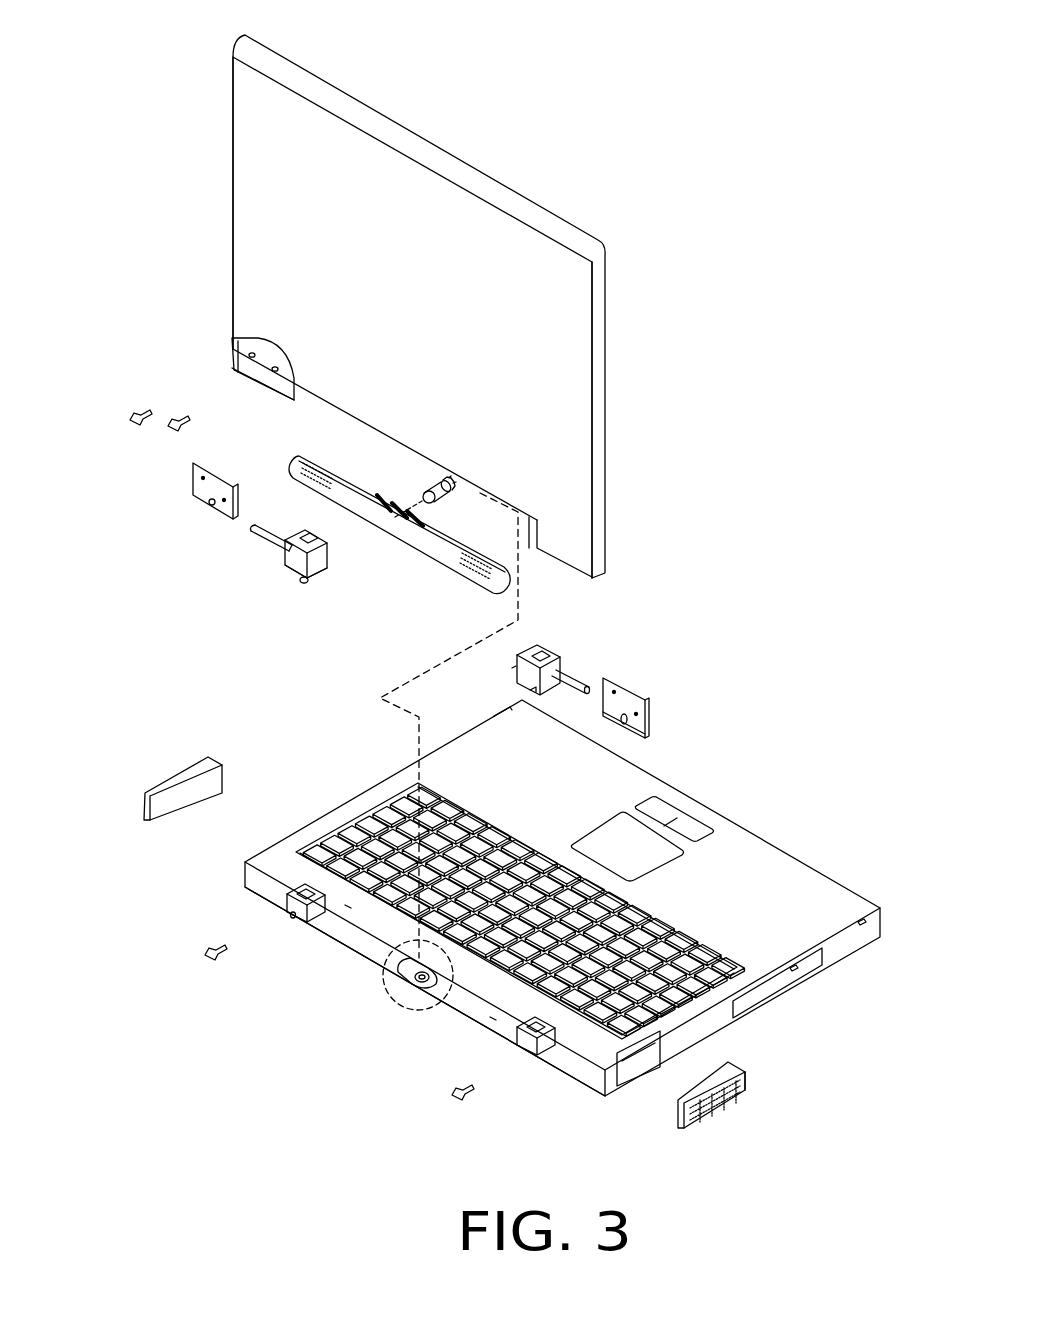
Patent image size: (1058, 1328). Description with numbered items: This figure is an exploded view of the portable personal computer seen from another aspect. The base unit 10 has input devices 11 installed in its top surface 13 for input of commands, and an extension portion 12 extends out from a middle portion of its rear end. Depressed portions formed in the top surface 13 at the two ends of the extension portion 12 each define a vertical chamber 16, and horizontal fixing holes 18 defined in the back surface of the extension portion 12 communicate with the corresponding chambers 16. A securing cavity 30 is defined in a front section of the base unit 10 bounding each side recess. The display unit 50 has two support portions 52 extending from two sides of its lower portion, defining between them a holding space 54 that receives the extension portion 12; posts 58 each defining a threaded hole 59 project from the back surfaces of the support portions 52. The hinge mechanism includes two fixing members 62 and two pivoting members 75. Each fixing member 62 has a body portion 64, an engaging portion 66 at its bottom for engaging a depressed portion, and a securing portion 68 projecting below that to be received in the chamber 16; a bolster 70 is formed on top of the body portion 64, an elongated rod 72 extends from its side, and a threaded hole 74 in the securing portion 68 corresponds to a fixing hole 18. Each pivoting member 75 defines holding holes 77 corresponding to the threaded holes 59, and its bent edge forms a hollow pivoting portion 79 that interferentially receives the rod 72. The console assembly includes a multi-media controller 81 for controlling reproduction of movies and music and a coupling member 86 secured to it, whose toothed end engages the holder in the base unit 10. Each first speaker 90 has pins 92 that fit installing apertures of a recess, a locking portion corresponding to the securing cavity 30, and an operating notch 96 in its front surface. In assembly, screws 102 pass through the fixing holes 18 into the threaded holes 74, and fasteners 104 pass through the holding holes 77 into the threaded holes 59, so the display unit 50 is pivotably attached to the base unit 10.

The base unit 10 is at (560, 898).
The input devices 11 is at (737, 966).
The extension portion 12 is at (348, 944).
The top surface 13 is at (500, 977).
The vertical chamber 16 is at (307, 915).
The horizontal fixing hole 18 is at (288, 918).
The securing cavity 30 is at (680, 1038).
The display unit 50 is at (446, 118).
The support portion 52 is at (240, 344).
The holding space 54 is at (529, 522).
The post 58 is at (250, 378).
The threaded hole 59 is at (250, 355).
The fixing member 62 is at (246, 548).
The body portion 64 is at (285, 560).
The engaging portion 66 is at (333, 556).
The securing portion 68 is at (319, 607).
The bolster 70 is at (282, 546).
The elongated rod 72 is at (268, 530).
The threaded hole 74 is at (300, 570).
The pivoting member 75 is at (164, 493).
The holding hole 77 is at (205, 477).
The hollow pivoting portion 79 is at (208, 503).
The multi-media controller 81 is at (352, 483).
The coupling member 86 is at (428, 490).
The first speaker 90 is at (470, 948).
The pin 92 is at (680, 1106).
The operating notch 96 is at (746, 1080).
The screw 102 is at (202, 950).
The fastener 104 is at (128, 418).